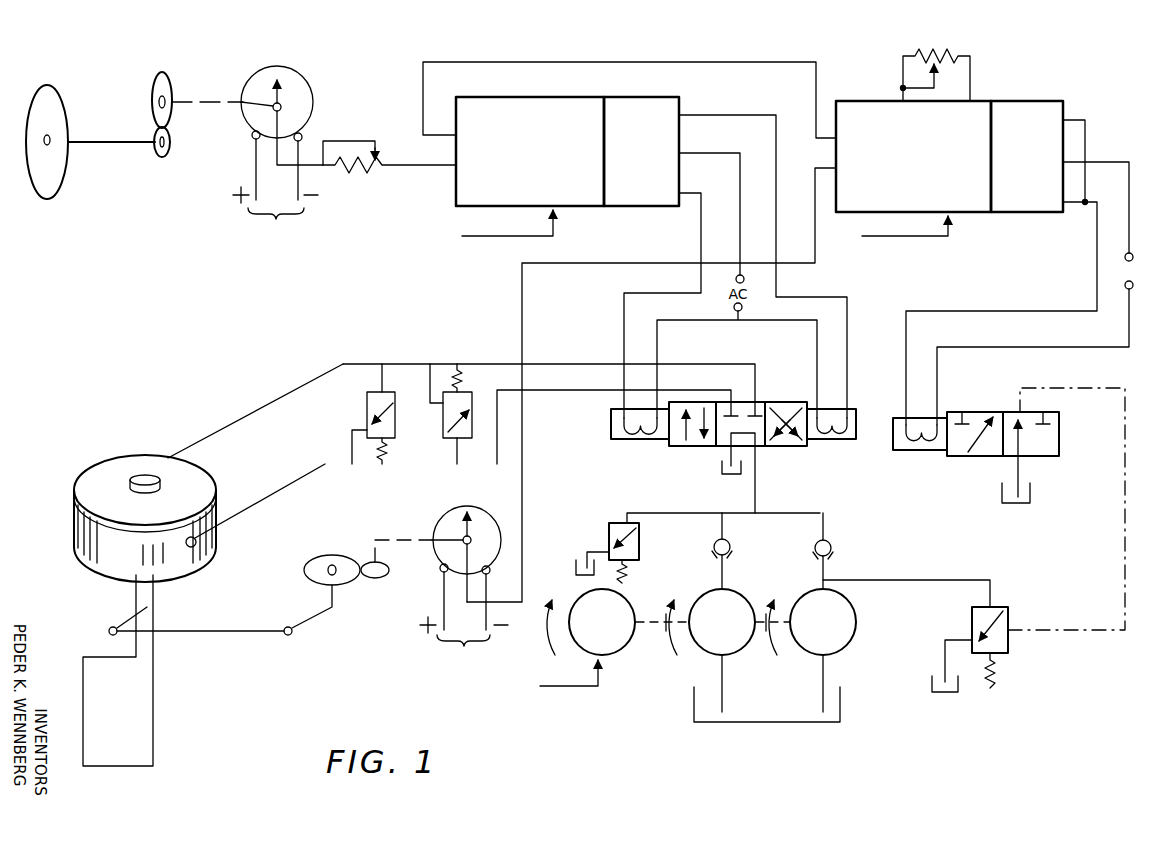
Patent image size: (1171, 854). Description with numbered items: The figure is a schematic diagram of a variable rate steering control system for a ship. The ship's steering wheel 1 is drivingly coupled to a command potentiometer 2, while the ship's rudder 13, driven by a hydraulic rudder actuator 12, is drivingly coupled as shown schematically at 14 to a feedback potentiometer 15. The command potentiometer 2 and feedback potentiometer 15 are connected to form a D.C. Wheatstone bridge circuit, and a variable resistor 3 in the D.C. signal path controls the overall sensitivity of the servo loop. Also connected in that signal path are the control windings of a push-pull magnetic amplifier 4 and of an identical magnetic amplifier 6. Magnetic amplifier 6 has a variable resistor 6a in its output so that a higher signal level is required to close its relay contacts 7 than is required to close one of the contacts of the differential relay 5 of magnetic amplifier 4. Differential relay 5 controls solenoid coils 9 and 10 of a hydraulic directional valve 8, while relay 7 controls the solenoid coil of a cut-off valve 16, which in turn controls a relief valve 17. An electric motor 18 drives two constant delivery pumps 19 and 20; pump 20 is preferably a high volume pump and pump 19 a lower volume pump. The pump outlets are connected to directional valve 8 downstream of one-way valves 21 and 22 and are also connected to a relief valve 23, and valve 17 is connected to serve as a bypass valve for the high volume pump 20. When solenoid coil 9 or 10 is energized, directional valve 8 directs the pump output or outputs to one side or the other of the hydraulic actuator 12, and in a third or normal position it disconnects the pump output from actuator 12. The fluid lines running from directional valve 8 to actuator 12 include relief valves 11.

The ship's steering wheel 1 is at (64, 93).
The command potentiometer 2 is at (303, 84).
The variable resistor 3 is at (348, 140).
The push-pull magnetic amplifier 4 is at (556, 96).
The differential relay 5 is at (650, 96).
The magnetic amplifier 6 is at (985, 100).
The variable resistor 6a is at (920, 50).
The relay contacts 7 is at (1063, 116).
The hydraulic directional valve 8 is at (768, 398).
The solenoid coil 9 is at (641, 440).
The solenoid coil 10 is at (838, 440).
The relief valves 11 is at (400, 438).
The hydraulic rudder actuator 12 is at (170, 457).
The ship's rudder 13 is at (83, 672).
The drive coupling 14 is at (258, 630).
The feedback potentiometer 15 is at (480, 518).
The cut-off valve 16 is at (980, 411).
The relief valve 17 is at (1010, 648).
The electric motor 18 is at (636, 640).
The constant delivery pump 19 is at (745, 648).
The constant delivery pump 20 is at (853, 640).
The one-way valve 21 is at (836, 547).
The one-way valve 22 is at (734, 550).
The relief valve 23 is at (613, 521).